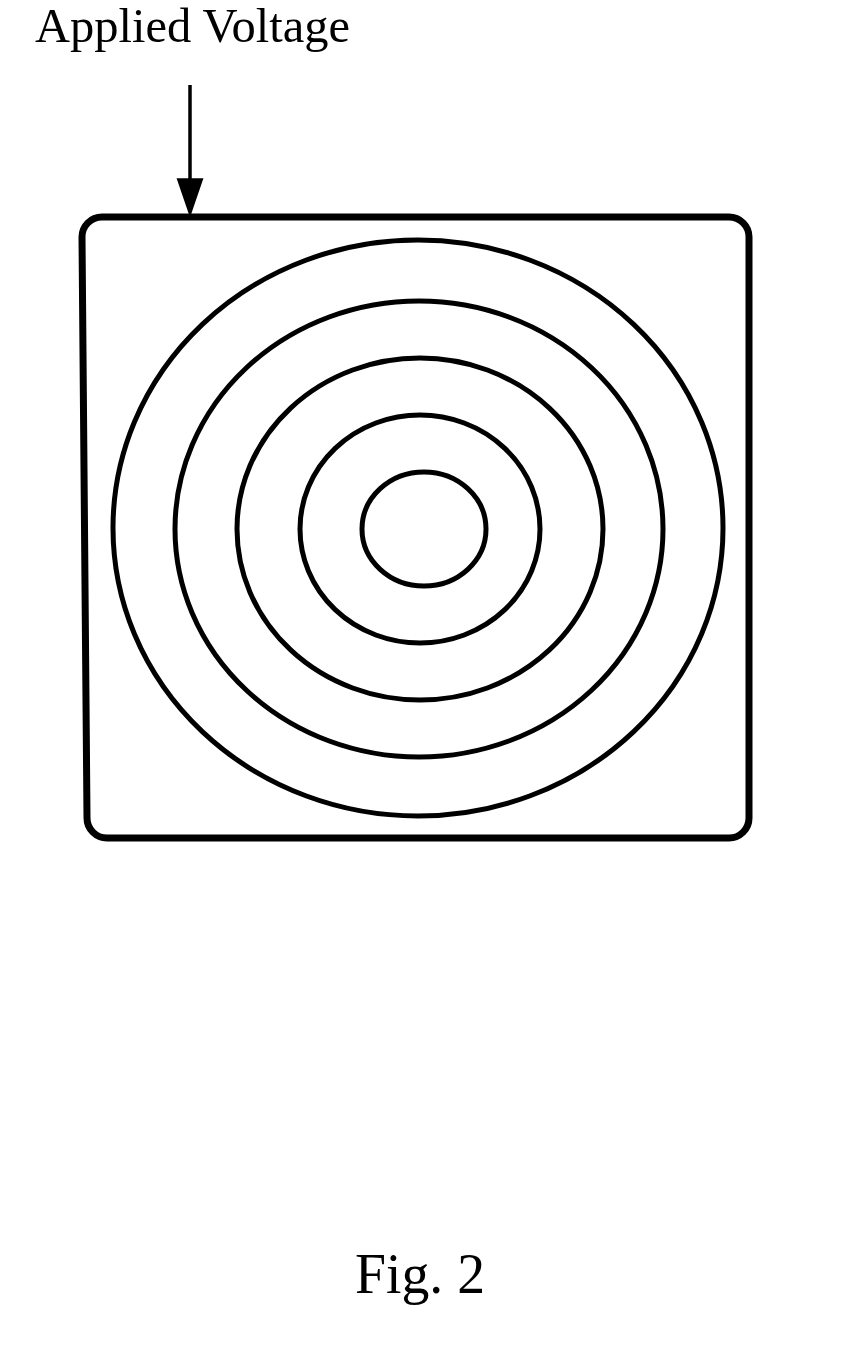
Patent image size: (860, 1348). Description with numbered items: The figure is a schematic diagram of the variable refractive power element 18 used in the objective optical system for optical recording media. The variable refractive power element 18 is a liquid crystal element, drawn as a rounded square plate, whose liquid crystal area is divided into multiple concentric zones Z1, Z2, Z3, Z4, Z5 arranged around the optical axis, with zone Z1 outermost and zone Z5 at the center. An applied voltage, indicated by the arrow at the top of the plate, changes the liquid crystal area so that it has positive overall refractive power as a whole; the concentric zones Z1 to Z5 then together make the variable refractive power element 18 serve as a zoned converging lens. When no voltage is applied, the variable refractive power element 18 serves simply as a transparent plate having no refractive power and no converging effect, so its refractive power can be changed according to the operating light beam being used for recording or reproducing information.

The variable refractive power element 18 is at (620, 221).
The concentric zone Z1 is at (418, 528).
The concentric zone Z2 is at (419, 529).
The concentric zone Z3 is at (420, 529).
The concentric zone Z4 is at (420, 529).
The concentric zone Z5 is at (424, 529).